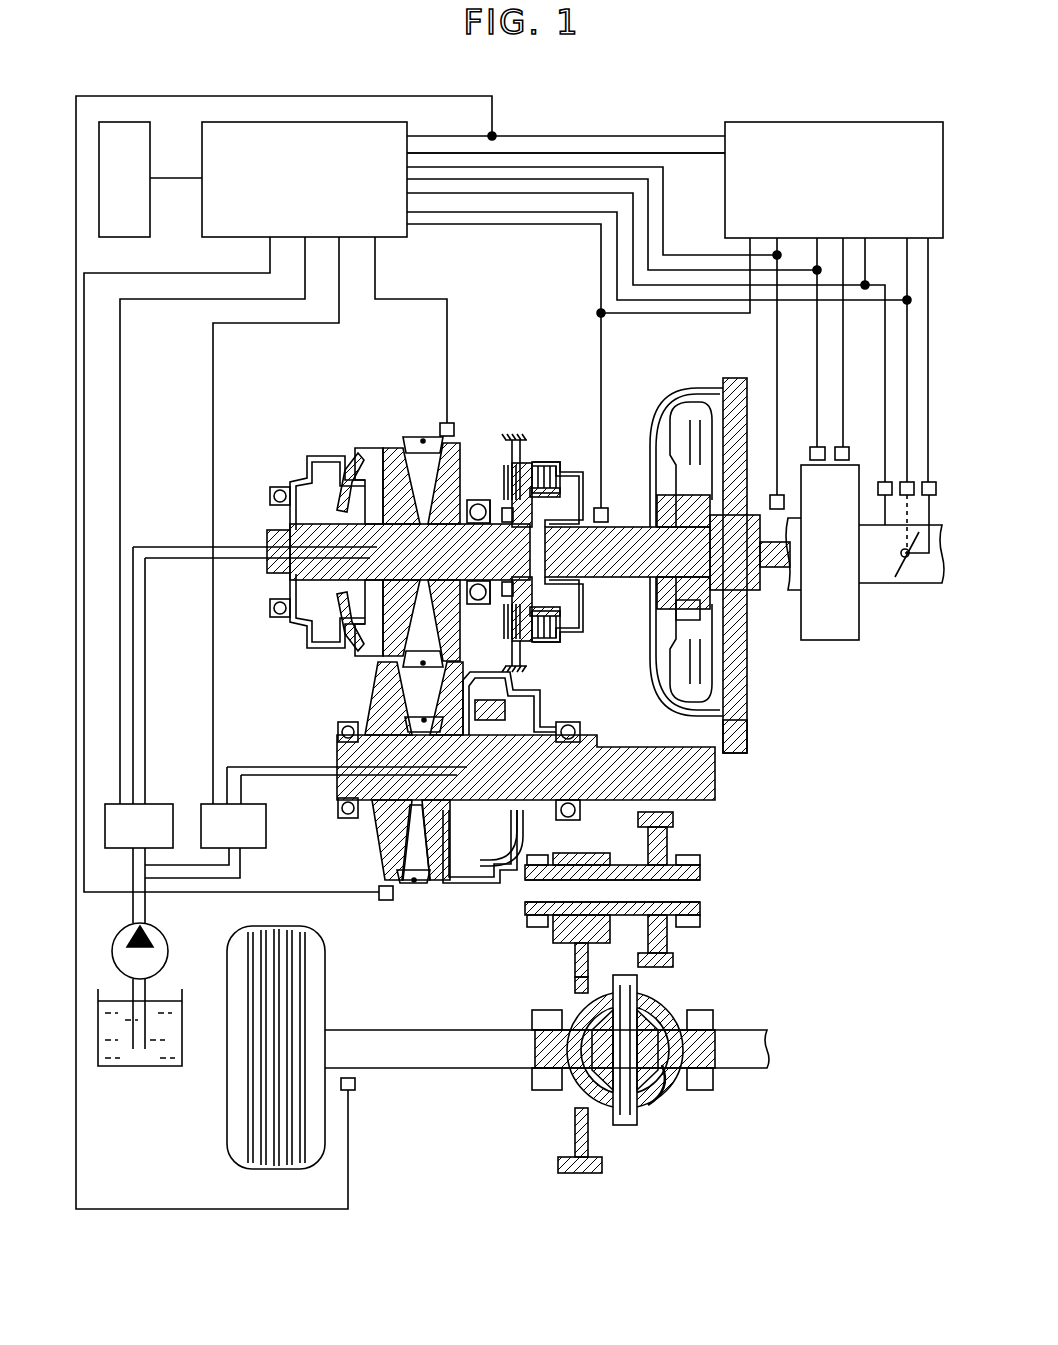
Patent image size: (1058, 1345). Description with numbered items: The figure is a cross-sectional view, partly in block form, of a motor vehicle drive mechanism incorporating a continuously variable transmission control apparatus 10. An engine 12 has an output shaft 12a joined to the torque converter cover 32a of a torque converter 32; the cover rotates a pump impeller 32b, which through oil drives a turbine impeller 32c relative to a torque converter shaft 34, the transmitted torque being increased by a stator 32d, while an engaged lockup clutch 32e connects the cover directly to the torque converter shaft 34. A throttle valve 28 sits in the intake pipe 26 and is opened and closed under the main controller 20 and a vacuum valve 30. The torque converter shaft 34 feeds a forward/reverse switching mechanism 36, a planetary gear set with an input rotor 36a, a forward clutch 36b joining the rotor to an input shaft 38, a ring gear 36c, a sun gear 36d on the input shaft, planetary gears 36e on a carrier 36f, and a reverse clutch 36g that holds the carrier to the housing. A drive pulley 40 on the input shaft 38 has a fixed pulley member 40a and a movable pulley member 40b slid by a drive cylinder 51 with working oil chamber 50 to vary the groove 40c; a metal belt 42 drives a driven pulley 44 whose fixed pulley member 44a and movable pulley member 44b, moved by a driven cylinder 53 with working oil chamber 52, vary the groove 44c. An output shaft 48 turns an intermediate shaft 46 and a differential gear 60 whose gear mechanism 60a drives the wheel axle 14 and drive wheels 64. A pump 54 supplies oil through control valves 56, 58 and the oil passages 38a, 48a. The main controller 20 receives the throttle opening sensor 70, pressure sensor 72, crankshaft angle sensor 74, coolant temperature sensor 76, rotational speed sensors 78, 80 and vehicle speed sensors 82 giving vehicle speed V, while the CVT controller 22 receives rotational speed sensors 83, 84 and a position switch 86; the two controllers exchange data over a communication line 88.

The continuously variable transmission control apparatus 10 is at (268, 85).
The engine 12 is at (804, 580).
The output shaft 12a is at (783, 590).
The wheel axle 14 is at (478, 1068).
The main controller 20 is at (853, 122).
The CVT controller 22 is at (365, 122).
The intake pipe 26 is at (932, 583).
The throttle valve 28 is at (903, 570).
The vacuum valve 30 is at (928, 482).
The torque converter 32 is at (675, 538).
The torque converter cover 32a is at (670, 408).
The pump impeller 32b is at (663, 432).
The turbine impeller 32c is at (697, 402).
The stator 32d is at (682, 622).
The lockup clutch 32e is at (745, 730).
The torque converter shaft 34 is at (650, 527).
The forward/reverse switching mechanism 36 is at (546, 504).
The input rotor 36a is at (555, 642).
The forward clutch 36b is at (570, 632).
The ring gear 36c is at (540, 462).
The sun gear 36d is at (466, 500).
The planetary gears 36e is at (522, 664).
The carrier 36f is at (478, 498).
The reverse clutch 36g is at (518, 440).
The input shaft 38 is at (478, 582).
The oil passage 38a is at (312, 552).
The drive pulley 40 is at (351, 494).
The fixed pulley member 40a is at (450, 450).
The movable pulley member 40b is at (392, 470).
The groove 40c is at (372, 475).
The metal belt 42 is at (413, 884).
The driven pulley 44 is at (347, 771).
The fixed pulley member 44a is at (385, 700).
The movable pulley member 44b is at (455, 690).
The groove 44c is at (412, 848).
The intermediate shaft 46 is at (700, 890).
The output shaft 48 is at (715, 785).
The oil passage 48a is at (355, 767).
The working oil chamber 50 is at (290, 487).
The drive cylinder 51 is at (332, 458).
The working oil chamber 52 is at (512, 696).
The driven cylinder 53 is at (500, 862).
The pump 54 is at (168, 935).
The control valve 56 is at (157, 804).
The control valve 58 is at (266, 830).
The differential gear 60 is at (680, 1005).
The gear mechanism 60a is at (668, 1102).
The drive wheel 64 is at (325, 975).
The throttle opening sensor 70 is at (907, 482).
The pressure sensor 72 is at (885, 482).
The crankshaft angle sensor 74 is at (815, 447).
The coolant temperature sensor 76 is at (838, 447).
The rotational speed sensor 78 is at (773, 495).
The rotational speed sensor 80 is at (607, 508).
The vehicle speed sensor 82 is at (350, 1090).
The rotational speed sensor 83 is at (452, 420).
The rotational speed sensor 84 is at (386, 900).
The position switch 86 is at (125, 122).
The communication line 88 is at (553, 153).
The vehicle speed V is at (672, 136).